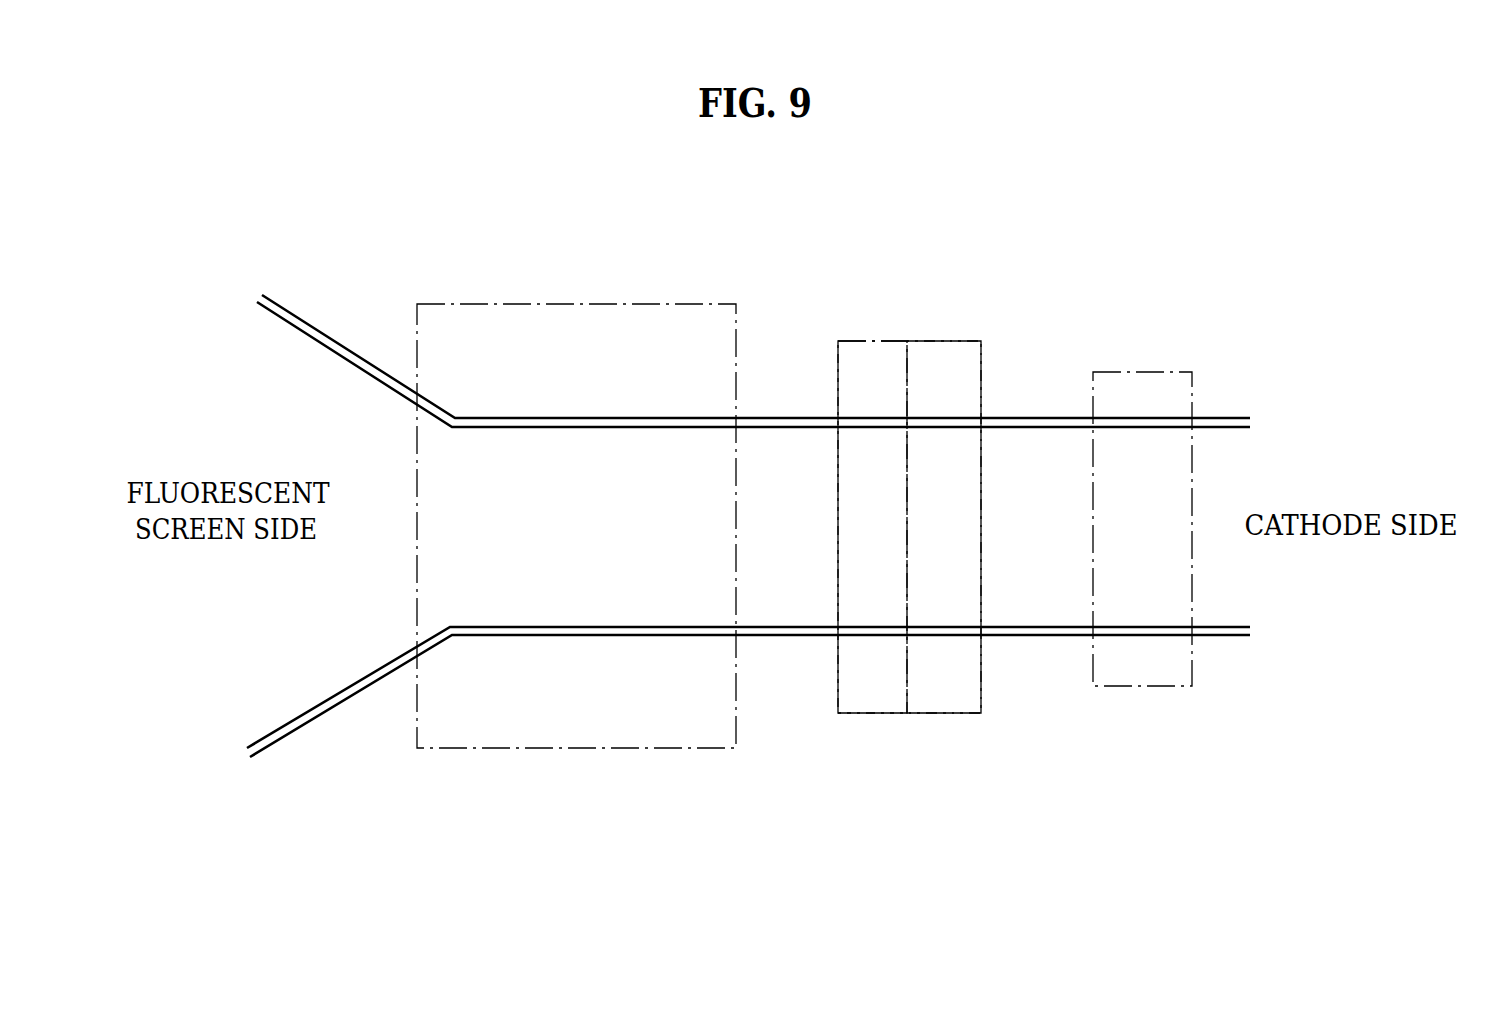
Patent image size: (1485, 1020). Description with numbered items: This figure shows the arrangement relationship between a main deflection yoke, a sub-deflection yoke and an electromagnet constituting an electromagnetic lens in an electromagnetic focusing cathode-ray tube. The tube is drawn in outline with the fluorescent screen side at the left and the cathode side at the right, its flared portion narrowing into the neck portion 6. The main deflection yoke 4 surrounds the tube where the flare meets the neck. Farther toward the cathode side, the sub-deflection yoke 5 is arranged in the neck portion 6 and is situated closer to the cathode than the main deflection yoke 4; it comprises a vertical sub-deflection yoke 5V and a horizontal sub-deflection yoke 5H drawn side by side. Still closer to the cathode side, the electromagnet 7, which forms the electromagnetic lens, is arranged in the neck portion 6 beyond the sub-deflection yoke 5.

The main deflection yoke 4 is at (445, 748).
The sub-deflection yoke 5 is at (983, 256).
The vertical sub-deflection yoke 5V is at (861, 340).
The horizontal sub-deflection yoke 5H is at (949, 340).
The neck portion 6 is at (1213, 418).
The electromagnet 7 is at (1096, 686).